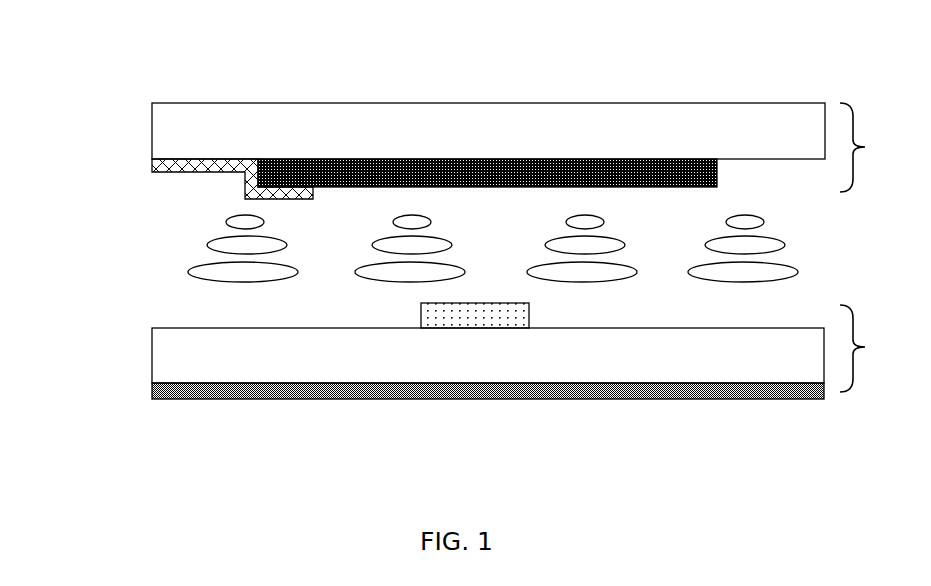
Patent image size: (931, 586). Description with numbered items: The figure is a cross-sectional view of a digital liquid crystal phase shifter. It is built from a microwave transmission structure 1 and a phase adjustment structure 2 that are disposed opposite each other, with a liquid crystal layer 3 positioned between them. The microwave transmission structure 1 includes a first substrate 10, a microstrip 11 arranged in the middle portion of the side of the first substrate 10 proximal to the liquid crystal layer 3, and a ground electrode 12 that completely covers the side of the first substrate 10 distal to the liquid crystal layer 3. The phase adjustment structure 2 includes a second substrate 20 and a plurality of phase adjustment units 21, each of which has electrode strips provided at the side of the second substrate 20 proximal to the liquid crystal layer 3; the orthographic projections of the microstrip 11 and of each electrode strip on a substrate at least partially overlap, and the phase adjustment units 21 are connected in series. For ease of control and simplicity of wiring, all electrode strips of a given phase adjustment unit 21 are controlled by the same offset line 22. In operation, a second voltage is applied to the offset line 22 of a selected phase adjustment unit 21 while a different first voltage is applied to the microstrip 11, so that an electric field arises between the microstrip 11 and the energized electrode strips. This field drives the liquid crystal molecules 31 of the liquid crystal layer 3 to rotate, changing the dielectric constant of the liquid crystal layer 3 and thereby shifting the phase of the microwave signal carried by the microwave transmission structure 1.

The microwave transmission structure 1 is at (863, 348).
The first substrate 10 is at (183, 355).
The microstrip 11 is at (421, 313).
The ground electrode 12 is at (163, 388).
The phase adjustment structure 2 is at (863, 147).
The second substrate 20 is at (370, 125).
The phase adjustment unit 21 is at (423, 172).
The offset line 22 is at (152, 163).
The liquid crystal layer 3 is at (420, 237).
The liquid crystal molecules 31 is at (263, 242).